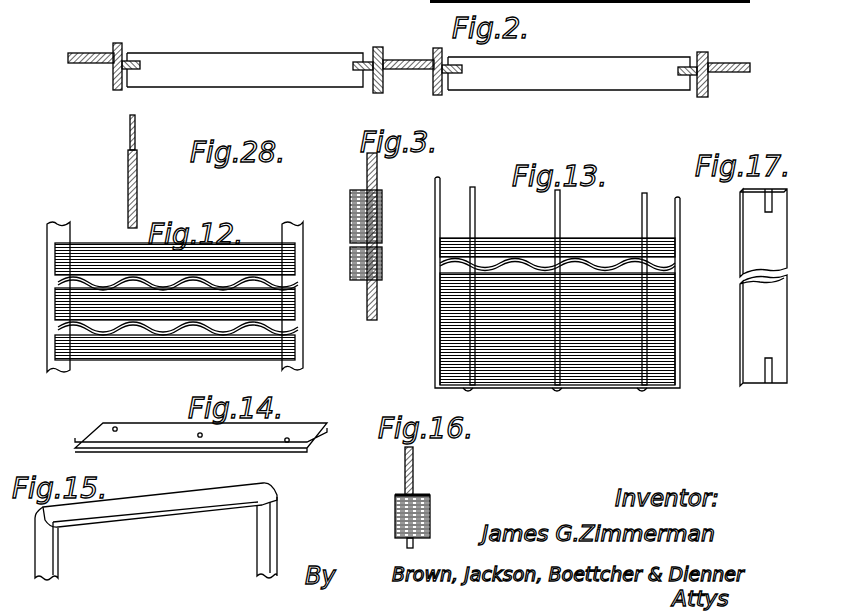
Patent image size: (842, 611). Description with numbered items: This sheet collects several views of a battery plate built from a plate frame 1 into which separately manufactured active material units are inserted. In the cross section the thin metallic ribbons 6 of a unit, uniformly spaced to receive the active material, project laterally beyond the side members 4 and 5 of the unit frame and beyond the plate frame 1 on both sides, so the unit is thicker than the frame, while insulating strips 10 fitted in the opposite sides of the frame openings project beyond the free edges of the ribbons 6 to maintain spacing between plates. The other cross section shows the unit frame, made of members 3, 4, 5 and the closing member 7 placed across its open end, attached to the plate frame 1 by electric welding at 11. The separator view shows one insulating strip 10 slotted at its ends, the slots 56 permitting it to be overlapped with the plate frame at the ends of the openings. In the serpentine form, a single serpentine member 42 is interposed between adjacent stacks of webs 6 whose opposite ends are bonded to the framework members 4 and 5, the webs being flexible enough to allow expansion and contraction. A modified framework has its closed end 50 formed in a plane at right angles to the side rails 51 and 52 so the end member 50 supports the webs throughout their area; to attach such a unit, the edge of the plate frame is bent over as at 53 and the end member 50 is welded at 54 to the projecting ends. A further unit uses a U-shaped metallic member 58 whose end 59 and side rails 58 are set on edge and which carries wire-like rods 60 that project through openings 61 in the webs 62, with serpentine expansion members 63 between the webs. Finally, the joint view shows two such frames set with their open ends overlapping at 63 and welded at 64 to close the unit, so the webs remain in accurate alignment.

In FIG. 2, the plate frame 1 is at (96, 50).
In FIG. 3, the plate frame 1 is at (378, 176).
In FIG. 3, the active material frame member 3 is at (366, 178).
In FIG. 2, the side member of unit frame 4 is at (123, 56).
In FIG. 3, the side member of unit frame 4 is at (368, 304).
In FIG. 12, the side member of unit frame 4 is at (68, 240).
In FIG. 2, the side member of unit frame 5 is at (368, 58).
In FIG. 12, the side member of unit frame 5 is at (299, 238).
In FIG. 2, the metallic ribbons 6 is at (312, 62).
In FIG. 3, the metallic ribbons 6 is at (382, 222).
In FIG. 12, the metallic ribbons 6 is at (130, 257).
In FIG. 3, the closing member 7 is at (367, 294).
In FIG. 2, the insulating strips 10 is at (110, 84).
In FIG. 17, the insulating strips 10 is at (752, 228).
In FIG. 3, the electric weld 11 is at (365, 185).
In FIG. 12, the serpentine member 42 is at (58, 284).
In FIG. 15, the closed end 50 is at (198, 512).
In FIG. 16, the closed end 50 is at (394, 506).
In FIG. 15, the side rail 51 is at (50, 558).
In FIG. 16, the side rail 51 is at (408, 544).
In FIG. 15, the side rail 52 is at (274, 534).
In FIG. 16, the bent-over edge 53 is at (414, 494).
In FIG. 16, the weld 54 is at (400, 496).
In FIG. 17, the slots 56 is at (760, 206).
In FIG. 13, the U-shaped metallic member 58 is at (440, 188).
In FIG. 13, the end of U-shaped member 59 is at (542, 390).
In FIG. 13, the wire-like rods 60 is at (476, 218).
In FIG. 14, the openings 61 is at (116, 428).
In FIG. 13, the webs 62 is at (566, 250).
In FIG. 14, the webs 62 is at (250, 446).
In FIG. 28, the serpentine expansion members 63 is at (137, 180).
In FIG. 13, the serpentine expansion members 63 is at (504, 258).
In FIG. 28, the weld 64 is at (137, 152).